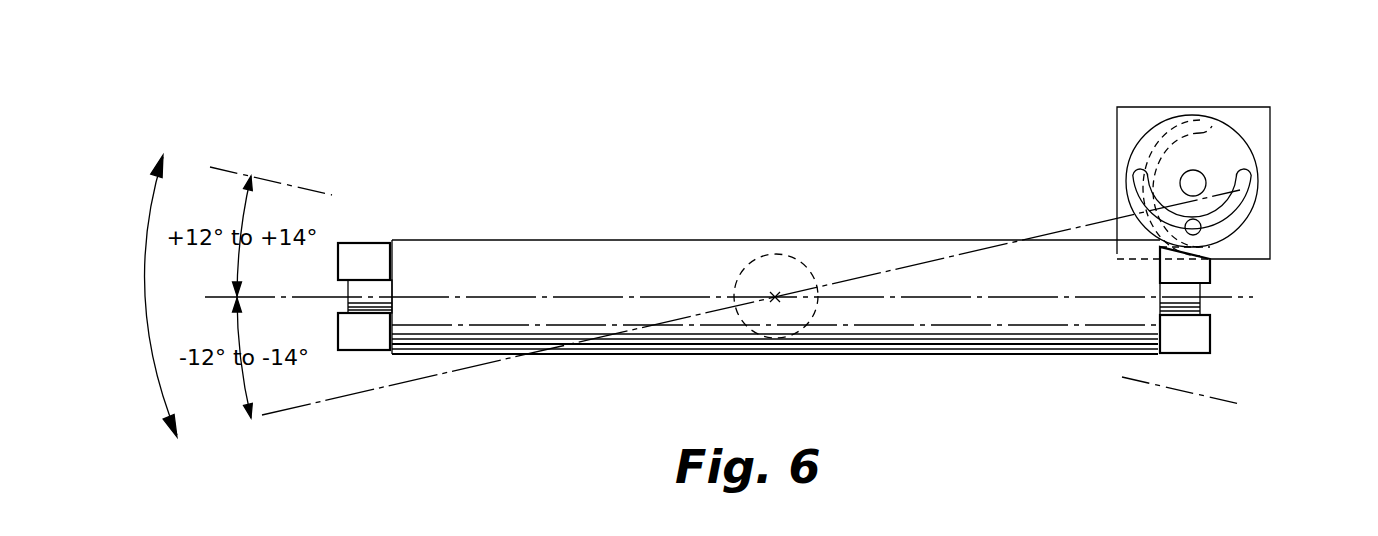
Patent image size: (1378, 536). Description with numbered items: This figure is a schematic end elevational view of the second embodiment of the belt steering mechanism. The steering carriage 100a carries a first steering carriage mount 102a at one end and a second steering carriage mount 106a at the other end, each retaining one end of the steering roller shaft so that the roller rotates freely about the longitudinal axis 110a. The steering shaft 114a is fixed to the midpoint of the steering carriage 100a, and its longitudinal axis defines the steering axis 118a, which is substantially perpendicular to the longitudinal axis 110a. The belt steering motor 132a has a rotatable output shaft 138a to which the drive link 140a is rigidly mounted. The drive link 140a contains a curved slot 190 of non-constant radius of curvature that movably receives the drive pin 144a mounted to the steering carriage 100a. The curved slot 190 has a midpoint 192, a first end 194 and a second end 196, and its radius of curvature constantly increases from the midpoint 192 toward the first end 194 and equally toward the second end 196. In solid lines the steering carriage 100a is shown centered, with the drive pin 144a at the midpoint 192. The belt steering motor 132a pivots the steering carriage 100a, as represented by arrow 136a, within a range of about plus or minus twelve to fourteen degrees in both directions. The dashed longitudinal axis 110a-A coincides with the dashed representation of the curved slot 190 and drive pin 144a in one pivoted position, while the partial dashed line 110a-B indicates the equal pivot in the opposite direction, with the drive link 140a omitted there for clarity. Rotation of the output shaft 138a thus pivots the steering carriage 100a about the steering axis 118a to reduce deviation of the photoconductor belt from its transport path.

The steering carriage 100a is at (361, 236).
The first steering carriage mount 102a is at (1212, 340).
The second steering carriage mount 106a is at (355, 342).
The longitudinal axis 110a is at (1238, 302).
The dashed longitudinal axis 110a-A is at (463, 370).
The partial dashed line 110a-B is at (1148, 388).
The steering shaft 114a is at (748, 265).
The steering axis 118a is at (774, 298).
The belt steering motor 132a is at (1255, 110).
The arrow 136a is at (146, 268).
The output shaft 138a is at (1198, 172).
The drive link 140a is at (1221, 130).
The drive pin 144a is at (1201, 226).
The curved slot 190 is at (1160, 130).
The midpoint 192 is at (1162, 232).
The first end 194 is at (1250, 167).
The second end 196 is at (1197, 108).